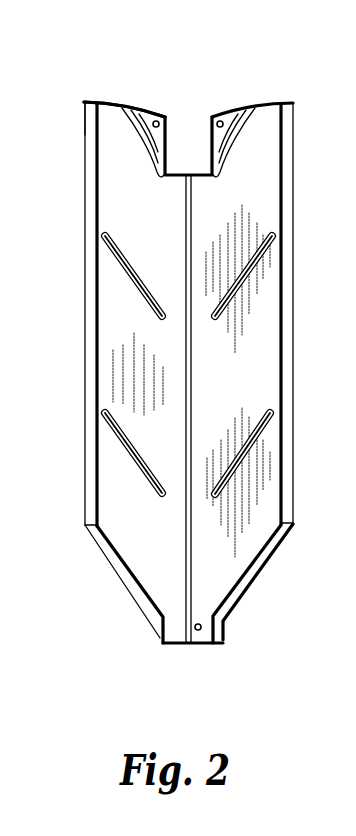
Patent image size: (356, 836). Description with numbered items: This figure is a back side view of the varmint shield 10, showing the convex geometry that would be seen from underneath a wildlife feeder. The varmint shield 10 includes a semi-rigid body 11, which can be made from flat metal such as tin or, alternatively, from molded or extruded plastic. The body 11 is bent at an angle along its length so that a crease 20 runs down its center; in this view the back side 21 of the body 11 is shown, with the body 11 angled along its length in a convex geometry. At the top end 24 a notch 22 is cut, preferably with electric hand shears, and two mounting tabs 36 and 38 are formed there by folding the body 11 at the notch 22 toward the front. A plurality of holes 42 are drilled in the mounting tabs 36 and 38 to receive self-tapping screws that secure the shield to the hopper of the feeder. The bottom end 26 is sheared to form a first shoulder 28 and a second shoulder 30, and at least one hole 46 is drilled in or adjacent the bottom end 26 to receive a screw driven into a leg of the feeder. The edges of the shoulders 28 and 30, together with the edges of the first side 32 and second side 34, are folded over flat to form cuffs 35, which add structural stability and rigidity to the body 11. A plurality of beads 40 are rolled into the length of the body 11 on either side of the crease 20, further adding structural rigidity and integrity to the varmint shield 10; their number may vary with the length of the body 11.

The varmint shield 10 is at (73, 183).
The semi-rigid body 11 is at (84, 131).
The crease 20 is at (192, 228).
The back side 21 is at (135, 505).
The notch 22 is at (176, 173).
The top end 24 is at (110, 107).
The bottom end 26 is at (170, 647).
The first shoulder 28 is at (248, 597).
The second shoulder 30 is at (110, 563).
The first side 32 is at (295, 325).
The second side 34 is at (83, 323).
The cuffs 35 is at (90, 237).
The mounting tab 36 is at (218, 120).
The mounting tab 38 is at (157, 121).
The beads 40 is at (120, 260).
The holes 42 is at (158, 121).
The hole 46 is at (199, 632).